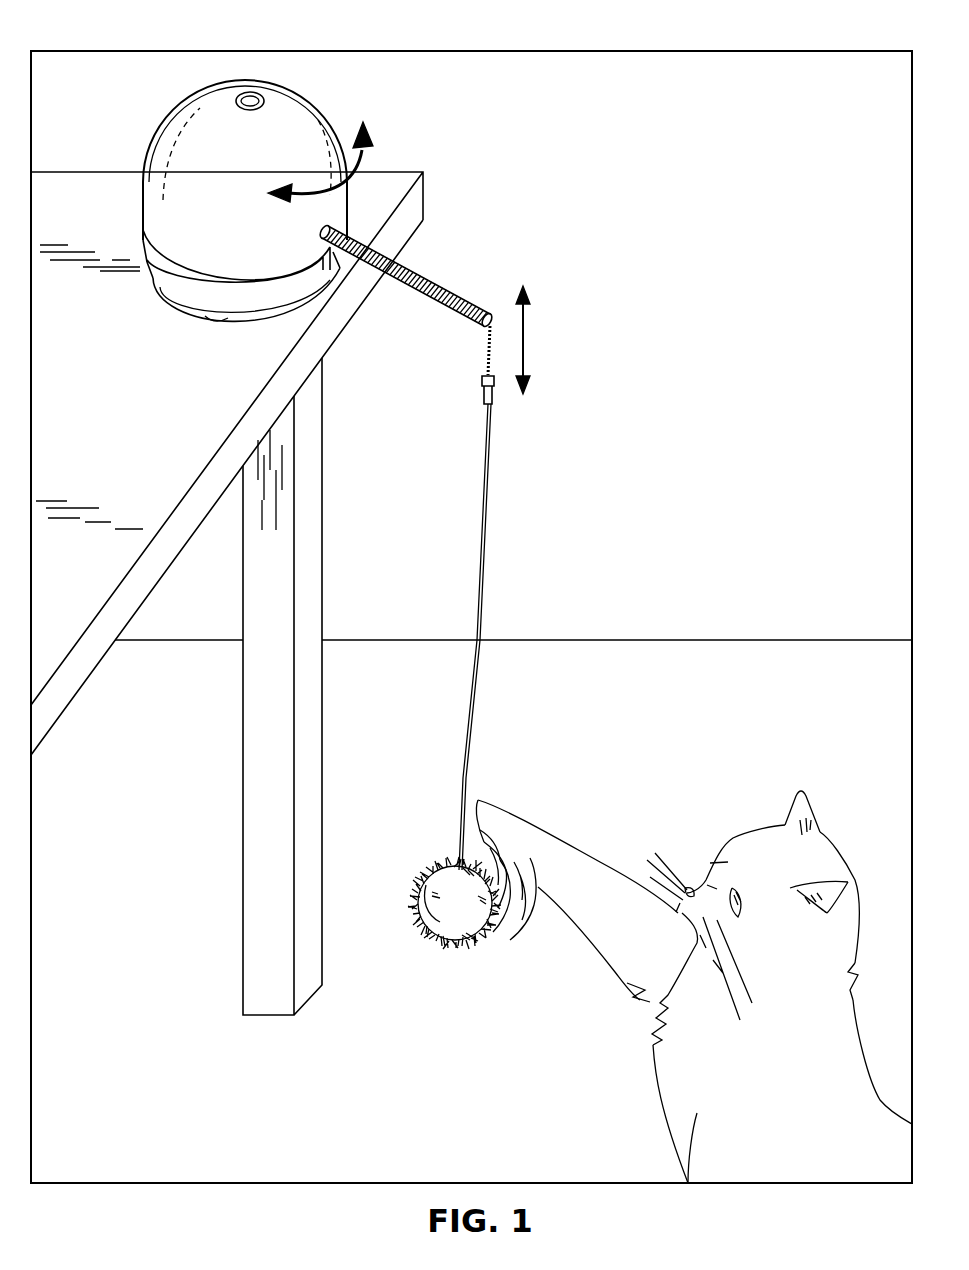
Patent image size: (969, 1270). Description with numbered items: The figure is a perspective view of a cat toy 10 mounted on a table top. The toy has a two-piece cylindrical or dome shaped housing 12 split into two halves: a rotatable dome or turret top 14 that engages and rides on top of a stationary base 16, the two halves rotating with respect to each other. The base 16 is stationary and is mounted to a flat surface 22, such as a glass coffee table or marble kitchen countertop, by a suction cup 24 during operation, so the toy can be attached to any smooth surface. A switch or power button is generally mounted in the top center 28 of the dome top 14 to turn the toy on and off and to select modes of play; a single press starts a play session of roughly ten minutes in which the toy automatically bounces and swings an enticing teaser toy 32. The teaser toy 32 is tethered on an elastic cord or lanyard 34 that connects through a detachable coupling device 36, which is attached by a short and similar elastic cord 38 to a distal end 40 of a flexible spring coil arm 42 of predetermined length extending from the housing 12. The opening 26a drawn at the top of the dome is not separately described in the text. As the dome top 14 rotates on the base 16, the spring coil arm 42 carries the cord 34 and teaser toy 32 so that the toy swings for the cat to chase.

The cat toy 10 is at (237, 192).
The housing 12 is at (206, 287).
The dome top 14 is at (258, 125).
The stationary base 16 is at (242, 298).
The flat surface 22 is at (133, 461).
The suction cup 24 is at (173, 308).
The aperture 26a is at (255, 100).
The top center 28 is at (220, 100).
The teaser toy 32 is at (440, 922).
The elastic cord 34 is at (480, 573).
The detachable coupling device 36 is at (487, 397).
The short elastic cord 38 is at (492, 357).
The distal end 40 is at (492, 307).
The flexible spring coil arm 42 is at (438, 282).